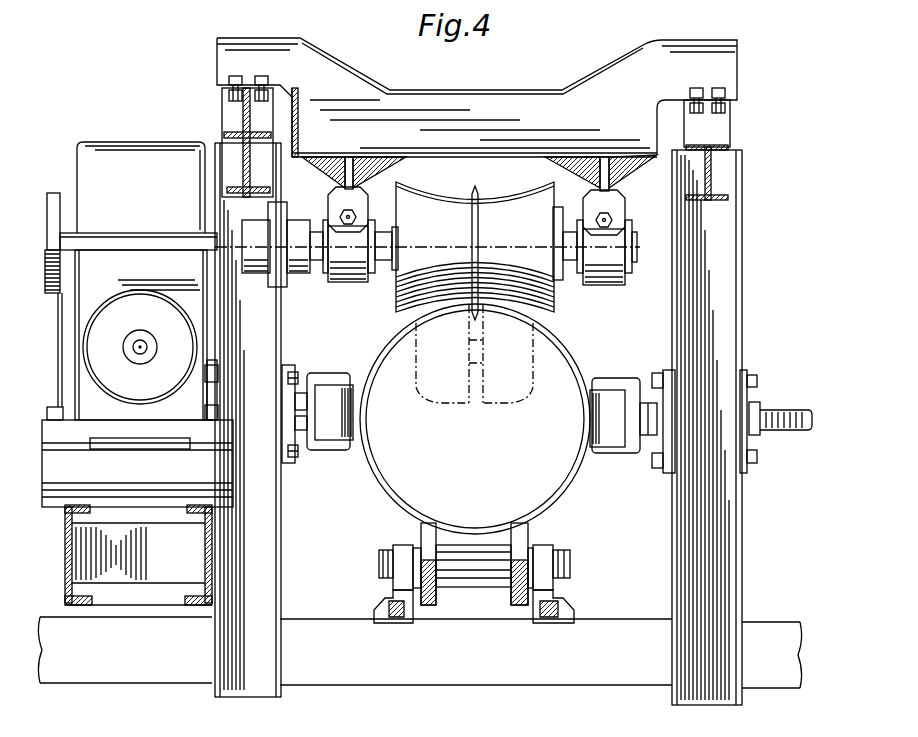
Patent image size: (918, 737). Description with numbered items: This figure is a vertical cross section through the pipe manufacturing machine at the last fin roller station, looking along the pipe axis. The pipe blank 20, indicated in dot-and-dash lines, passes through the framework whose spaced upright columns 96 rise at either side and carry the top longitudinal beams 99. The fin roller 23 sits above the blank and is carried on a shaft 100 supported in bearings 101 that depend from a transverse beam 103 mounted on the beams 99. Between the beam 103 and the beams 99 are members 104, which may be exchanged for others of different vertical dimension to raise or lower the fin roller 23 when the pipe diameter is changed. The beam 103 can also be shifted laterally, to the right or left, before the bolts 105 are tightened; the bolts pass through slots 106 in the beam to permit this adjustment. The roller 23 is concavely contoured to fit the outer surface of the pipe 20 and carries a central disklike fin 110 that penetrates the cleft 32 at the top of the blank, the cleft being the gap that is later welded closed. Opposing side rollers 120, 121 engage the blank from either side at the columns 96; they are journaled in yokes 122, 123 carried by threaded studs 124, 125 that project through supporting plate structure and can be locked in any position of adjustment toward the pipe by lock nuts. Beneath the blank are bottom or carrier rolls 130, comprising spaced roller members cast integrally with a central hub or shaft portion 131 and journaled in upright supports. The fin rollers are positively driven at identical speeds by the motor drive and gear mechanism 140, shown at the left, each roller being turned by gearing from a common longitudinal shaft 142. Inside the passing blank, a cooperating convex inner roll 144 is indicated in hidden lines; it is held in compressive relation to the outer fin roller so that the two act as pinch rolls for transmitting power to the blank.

The pipe blank 20 is at (574, 367).
The fin roller 23 is at (503, 206).
The cleft 32 is at (481, 311).
The upright columns 96 is at (746, 279).
The top longitudinal beams 99 is at (224, 155).
The shaft 100 is at (391, 277).
The bearings 101 is at (339, 283).
The transverse beam 103 is at (583, 85).
The members 104 is at (228, 108).
The bolts 105 is at (262, 76).
The slots 106 is at (299, 80).
The fin 110 is at (471, 196).
The side roller 120 is at (339, 431).
The side roller 121 is at (605, 449).
The yoke 122 is at (322, 446).
The yoke 123 is at (637, 457).
The threaded stud 124 is at (306, 392).
The threaded stud 125 is at (768, 418).
The bottom or carrier rolls 130 is at (420, 531).
The central hub or shaft portion 131 is at (461, 580).
The motor drive and gear mechanism 140 is at (101, 147).
The common longitudinal shaft 142 is at (142, 345).
The inner roll 144 is at (437, 393).